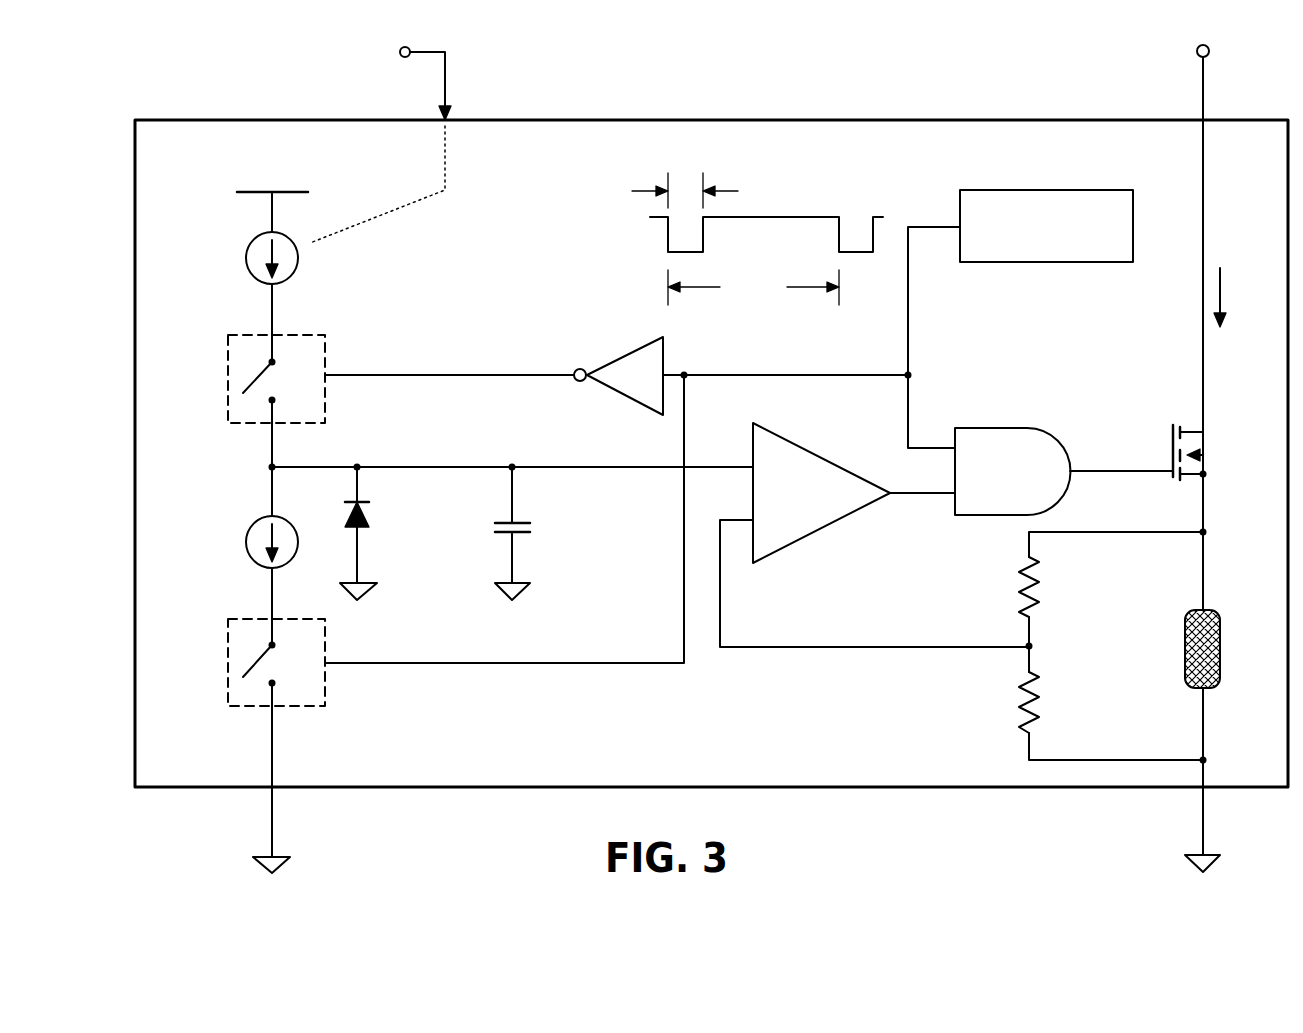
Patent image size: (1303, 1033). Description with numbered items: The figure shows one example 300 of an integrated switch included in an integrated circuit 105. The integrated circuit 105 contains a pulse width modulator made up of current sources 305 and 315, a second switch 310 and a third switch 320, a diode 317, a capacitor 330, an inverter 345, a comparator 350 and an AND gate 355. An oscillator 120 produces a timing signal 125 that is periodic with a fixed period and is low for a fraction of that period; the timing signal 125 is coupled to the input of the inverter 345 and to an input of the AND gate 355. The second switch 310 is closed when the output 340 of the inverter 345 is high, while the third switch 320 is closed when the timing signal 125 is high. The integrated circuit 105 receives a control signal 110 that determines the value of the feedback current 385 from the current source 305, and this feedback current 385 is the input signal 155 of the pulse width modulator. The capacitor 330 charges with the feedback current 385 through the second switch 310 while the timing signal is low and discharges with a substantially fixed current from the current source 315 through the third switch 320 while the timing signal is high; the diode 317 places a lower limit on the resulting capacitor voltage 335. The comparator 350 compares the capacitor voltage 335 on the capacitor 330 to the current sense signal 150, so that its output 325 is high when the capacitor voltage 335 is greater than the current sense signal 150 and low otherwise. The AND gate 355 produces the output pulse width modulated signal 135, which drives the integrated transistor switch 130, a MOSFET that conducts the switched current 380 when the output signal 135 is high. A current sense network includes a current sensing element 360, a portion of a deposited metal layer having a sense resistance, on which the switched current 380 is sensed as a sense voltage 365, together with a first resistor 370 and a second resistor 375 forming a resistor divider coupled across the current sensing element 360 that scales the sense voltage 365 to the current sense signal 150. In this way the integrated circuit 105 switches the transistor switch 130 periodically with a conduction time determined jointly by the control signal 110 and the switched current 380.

The integrated circuit 105 is at (711, 453).
The control signal UC 110 is at (452, 72).
The oscillator 120 is at (1098, 183).
The timing signal UOSC 125 is at (925, 345).
The switch S1 130 is at (1207, 440).
The signal UOUTPWM 135 is at (1100, 480).
The current sense signal UIS 150 is at (732, 633).
The input signal UINPWM 155 is at (264, 315).
The example of an integrated switch 300 is at (711, 456).
The current source 305 is at (250, 241).
The switch S2 310 is at (220, 380).
The current source 315 is at (248, 507).
The diode D1 317 is at (378, 520).
The switch S3 320 is at (220, 663).
The output of comparator 325 is at (923, 507).
The capacitor CD 330 is at (492, 537).
The voltage VD 335 is at (573, 523).
The output of inverter 340 is at (566, 383).
The inverter 345 is at (612, 350).
The comparator 350 is at (874, 535).
The AND gate 355 is at (1013, 471).
The current sensing element 360 is at (1210, 603).
The voltage VCS1 365 is at (1122, 648).
The resistor 370 is at (1045, 593).
The resistor 375 is at (1050, 705).
The switched current IS1 380 is at (1228, 260).
The current IFB 385 is at (345, 263).